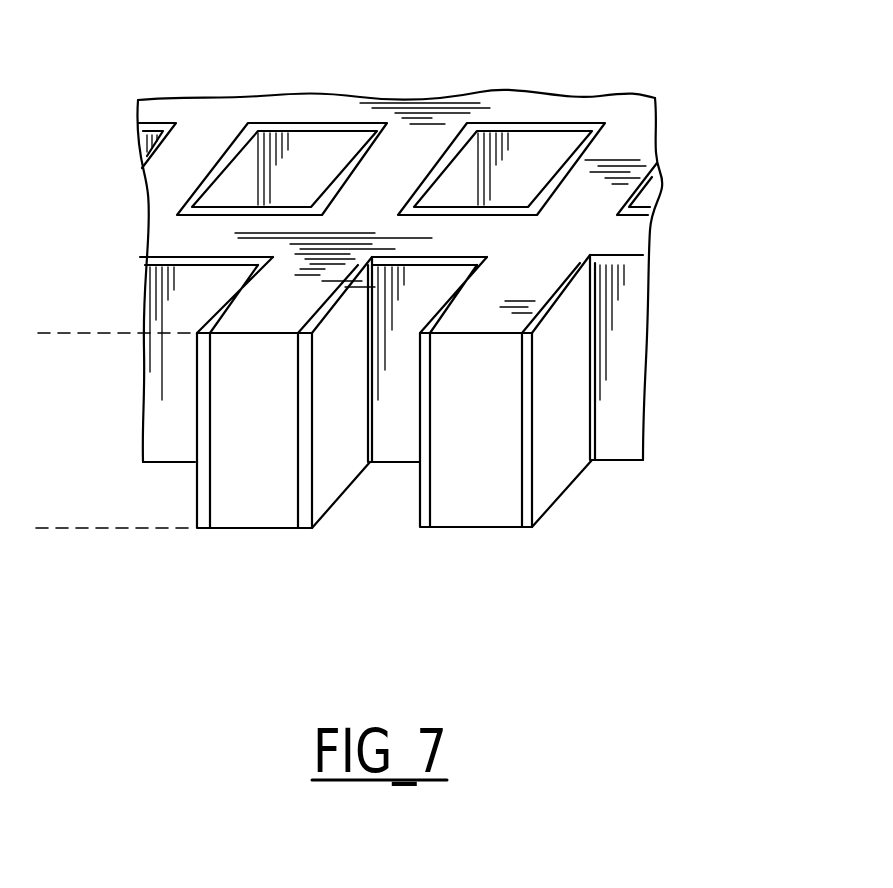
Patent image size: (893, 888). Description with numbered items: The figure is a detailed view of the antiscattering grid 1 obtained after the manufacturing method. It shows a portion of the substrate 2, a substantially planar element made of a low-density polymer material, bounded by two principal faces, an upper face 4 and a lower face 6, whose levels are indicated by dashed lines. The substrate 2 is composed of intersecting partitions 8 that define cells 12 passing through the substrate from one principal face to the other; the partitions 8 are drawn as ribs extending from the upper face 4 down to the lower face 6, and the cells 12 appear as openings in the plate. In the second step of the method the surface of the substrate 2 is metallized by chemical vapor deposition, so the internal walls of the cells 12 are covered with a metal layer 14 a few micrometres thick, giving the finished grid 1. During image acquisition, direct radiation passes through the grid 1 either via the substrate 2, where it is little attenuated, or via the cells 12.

The grid 1 is at (411, 317).
The substrate 2 is at (399, 233).
The cells 12 is at (530, 160).
The upper face 4 is at (53, 322).
The metal layer 14 is at (623, 346).
The lower face 6 is at (83, 540).
The partitions 8 is at (422, 540).